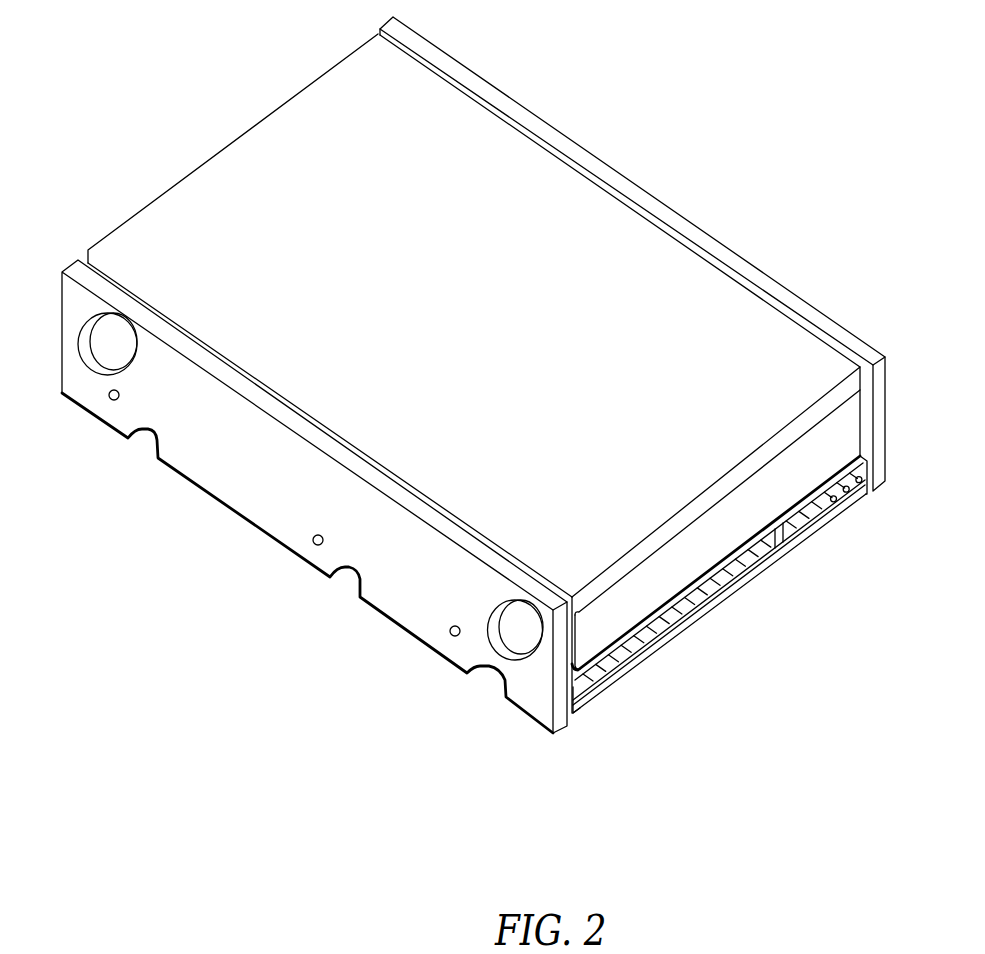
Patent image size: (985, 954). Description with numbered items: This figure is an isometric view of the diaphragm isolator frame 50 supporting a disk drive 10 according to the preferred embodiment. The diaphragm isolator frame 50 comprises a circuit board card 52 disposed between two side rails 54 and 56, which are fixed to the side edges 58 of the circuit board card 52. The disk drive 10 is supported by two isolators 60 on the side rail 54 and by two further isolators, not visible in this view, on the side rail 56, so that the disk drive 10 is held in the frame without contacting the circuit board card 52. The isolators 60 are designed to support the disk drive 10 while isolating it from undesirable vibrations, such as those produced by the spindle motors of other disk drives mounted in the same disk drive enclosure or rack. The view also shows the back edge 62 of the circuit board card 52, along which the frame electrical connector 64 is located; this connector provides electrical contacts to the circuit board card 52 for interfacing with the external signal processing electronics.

The disk drive 10 is at (212, 133).
The diaphragm isolator frame 50 is at (467, 435).
The circuit board card 52 is at (767, 563).
The side rail 54 is at (248, 508).
The side rail 56 is at (767, 274).
The side edges 58 is at (580, 700).
The isolators 60 is at (80, 347).
The back edge 62 is at (719, 587).
The frame electrical connector 64 is at (683, 612).